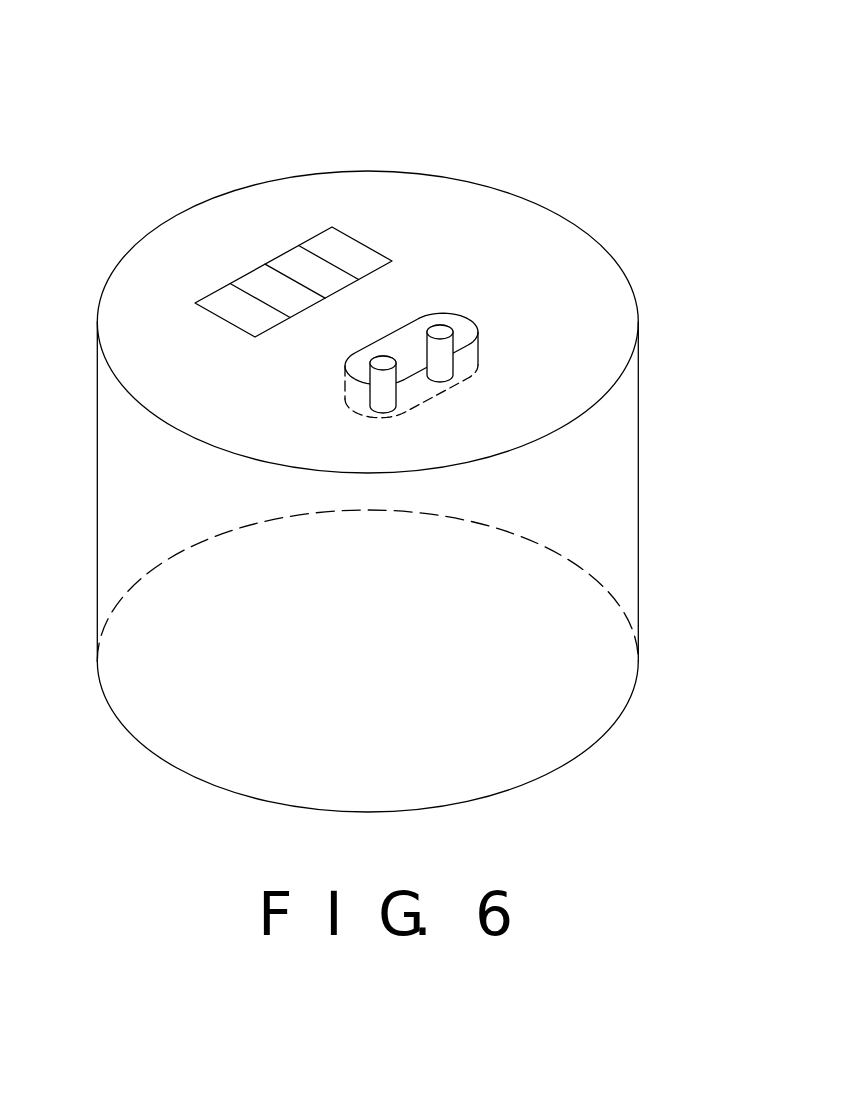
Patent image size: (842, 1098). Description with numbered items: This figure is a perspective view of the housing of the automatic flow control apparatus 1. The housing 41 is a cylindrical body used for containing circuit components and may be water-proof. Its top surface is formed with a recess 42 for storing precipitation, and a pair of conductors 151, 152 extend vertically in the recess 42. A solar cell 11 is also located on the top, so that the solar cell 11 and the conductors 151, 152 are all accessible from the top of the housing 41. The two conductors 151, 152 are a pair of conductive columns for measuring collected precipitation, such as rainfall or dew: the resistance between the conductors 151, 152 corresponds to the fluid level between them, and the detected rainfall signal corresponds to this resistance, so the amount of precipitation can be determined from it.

The automatic flow control apparatus 1 is at (153, 182).
The solar cell 11 is at (338, 253).
The housing 41 is at (592, 537).
The recess 42 is at (464, 332).
The conductor 151 is at (385, 377).
The conductor 152 is at (432, 352).